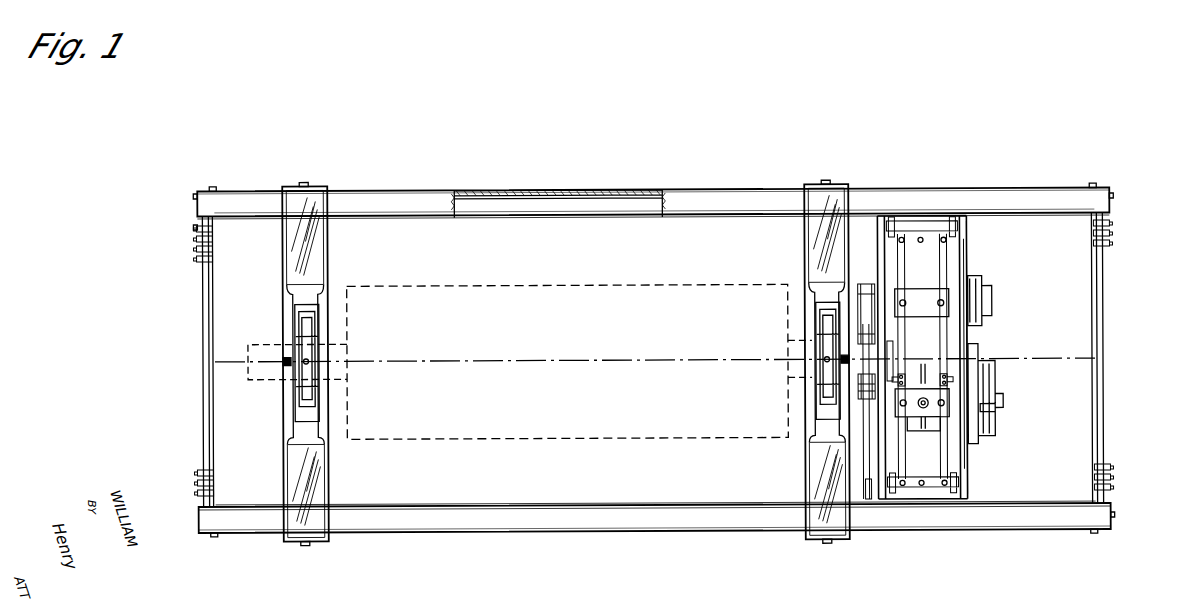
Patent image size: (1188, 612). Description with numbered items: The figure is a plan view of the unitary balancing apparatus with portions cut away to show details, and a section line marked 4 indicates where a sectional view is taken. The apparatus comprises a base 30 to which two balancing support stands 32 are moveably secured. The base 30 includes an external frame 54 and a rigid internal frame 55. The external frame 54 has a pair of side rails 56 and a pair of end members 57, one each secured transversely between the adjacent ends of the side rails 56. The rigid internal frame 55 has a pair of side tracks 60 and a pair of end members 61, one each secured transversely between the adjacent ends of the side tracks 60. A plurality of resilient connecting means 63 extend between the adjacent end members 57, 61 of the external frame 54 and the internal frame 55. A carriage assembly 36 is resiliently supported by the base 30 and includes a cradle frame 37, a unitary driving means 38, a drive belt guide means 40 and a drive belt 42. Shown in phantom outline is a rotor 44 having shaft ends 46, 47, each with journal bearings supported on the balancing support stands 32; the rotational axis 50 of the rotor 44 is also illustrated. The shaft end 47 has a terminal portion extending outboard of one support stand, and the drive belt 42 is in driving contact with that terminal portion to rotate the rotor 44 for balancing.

The base 30 is at (636, 535).
The balancing support stands 32 is at (333, 247).
The carriage assembly 36 is at (977, 460).
The cradle frame 37 is at (972, 251).
The unitary driving means 38 is at (1007, 364).
The drive belt guide means 40 is at (867, 276).
The drive belt 42 is at (868, 500).
The rotor 44 is at (406, 440).
The shaft end 46 is at (272, 385).
The shaft end 47 is at (892, 352).
The rotational axis 50 is at (563, 360).
The external frame 54 is at (459, 189).
The rigid internal frame 55 is at (528, 219).
The side rails 56 is at (704, 210).
The end members 57 is at (198, 318).
The side tracks 60 is at (554, 216).
The end members 61 is at (215, 301).
The resilient connecting means 63 is at (195, 232).
The section line 4- 4 is at (522, 559).